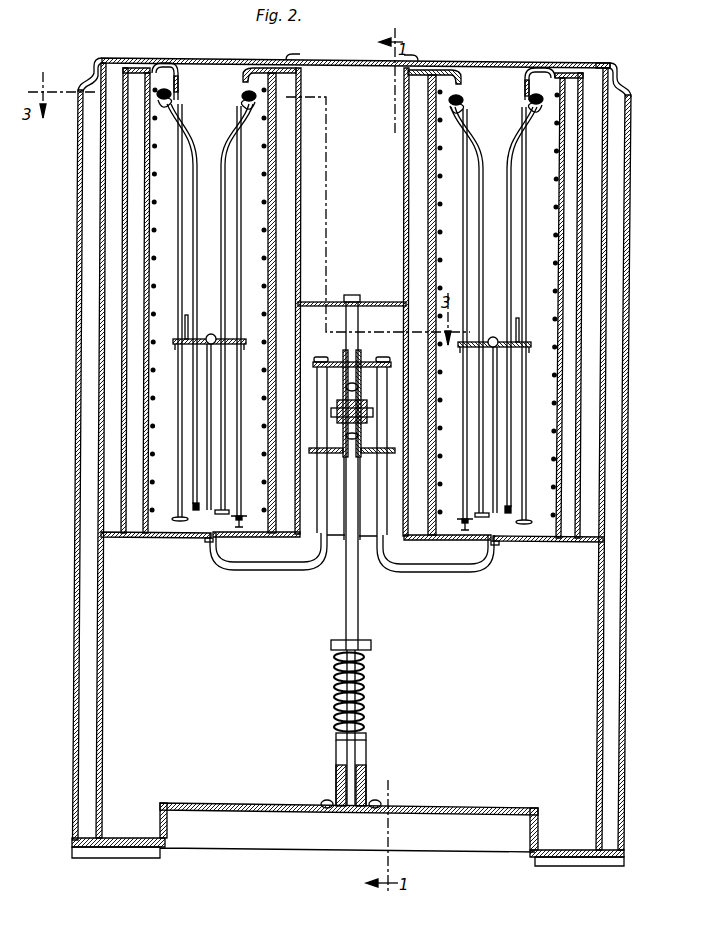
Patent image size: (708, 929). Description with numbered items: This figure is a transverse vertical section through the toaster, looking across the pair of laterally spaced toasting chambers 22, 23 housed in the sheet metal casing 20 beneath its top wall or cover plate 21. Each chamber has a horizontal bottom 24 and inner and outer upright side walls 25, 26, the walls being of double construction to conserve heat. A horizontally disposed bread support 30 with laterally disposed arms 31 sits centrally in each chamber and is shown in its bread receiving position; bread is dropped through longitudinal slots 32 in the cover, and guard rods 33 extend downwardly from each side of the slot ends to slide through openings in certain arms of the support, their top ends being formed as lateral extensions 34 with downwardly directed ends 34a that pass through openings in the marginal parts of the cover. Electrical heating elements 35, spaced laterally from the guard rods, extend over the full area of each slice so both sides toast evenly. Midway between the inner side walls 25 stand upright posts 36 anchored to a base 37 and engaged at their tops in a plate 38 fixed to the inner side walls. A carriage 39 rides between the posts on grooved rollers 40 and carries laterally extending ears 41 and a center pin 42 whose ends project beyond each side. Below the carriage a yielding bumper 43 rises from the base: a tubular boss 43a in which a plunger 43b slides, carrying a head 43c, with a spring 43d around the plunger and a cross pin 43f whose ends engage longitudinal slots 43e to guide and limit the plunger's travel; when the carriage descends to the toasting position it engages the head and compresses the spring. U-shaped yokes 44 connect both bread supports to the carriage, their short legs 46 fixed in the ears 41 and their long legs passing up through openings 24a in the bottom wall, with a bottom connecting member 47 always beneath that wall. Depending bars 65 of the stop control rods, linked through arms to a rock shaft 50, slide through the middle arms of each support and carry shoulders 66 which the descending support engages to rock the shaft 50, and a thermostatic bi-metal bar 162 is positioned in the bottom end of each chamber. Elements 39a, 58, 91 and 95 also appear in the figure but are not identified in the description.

The sheet metal casing 20 is at (76, 334).
The top wall or cover plate 21 is at (364, 59).
The toasting chamber 22 is at (202, 90).
The toasting chamber 23 is at (493, 99).
The horizontal bottom 24 is at (129, 539).
The openings 24a is at (205, 542).
The inner upright side wall 25 is at (403, 205).
The outer upright side wall 26 is at (122, 151).
The bread support 30 is at (187, 335).
The arms 31 is at (176, 346).
The longitudinal slots 32 is at (245, 64).
The guard rods 33 is at (184, 78).
The lateral extensions 34 is at (556, 70).
The downwardly directed ends 34a is at (578, 63).
The electrical heating elements 35 is at (268, 184).
The upright posts 36 is at (358, 625).
The base 37 is at (248, 804).
The plate 38 is at (392, 282).
The carriage 39 is at (362, 385).
The rim bead 39a is at (288, 60).
The grooved rollers 40 is at (347, 359).
The ears 41 is at (397, 361).
The center pin 42 is at (331, 409).
The yielding bumper 43 is at (376, 698).
The tubular boss 43a is at (360, 771).
The plunger 43b is at (346, 703).
The head 43c is at (372, 646).
The spring 43d is at (366, 685).
The longitudinal slots 43e is at (343, 753).
The cross pin 43f is at (367, 741).
The U-shaped yokes 44 is at (253, 571).
The short upright legs 46 is at (322, 578).
The bottom end connecting member 47 is at (238, 562).
The rock shaft 50 is at (166, 86).
The curved tube 58 is at (226, 191).
The depending bars 65 is at (238, 160).
The shoulder 66 is at (238, 517).
The lower collar 91 is at (393, 455).
The rod 95 is at (206, 433).
The thermostatic bi-metal bar 162 is at (352, 544).